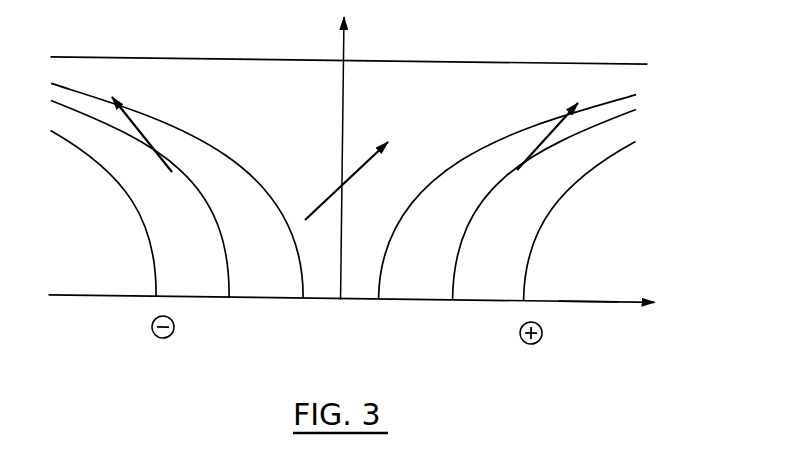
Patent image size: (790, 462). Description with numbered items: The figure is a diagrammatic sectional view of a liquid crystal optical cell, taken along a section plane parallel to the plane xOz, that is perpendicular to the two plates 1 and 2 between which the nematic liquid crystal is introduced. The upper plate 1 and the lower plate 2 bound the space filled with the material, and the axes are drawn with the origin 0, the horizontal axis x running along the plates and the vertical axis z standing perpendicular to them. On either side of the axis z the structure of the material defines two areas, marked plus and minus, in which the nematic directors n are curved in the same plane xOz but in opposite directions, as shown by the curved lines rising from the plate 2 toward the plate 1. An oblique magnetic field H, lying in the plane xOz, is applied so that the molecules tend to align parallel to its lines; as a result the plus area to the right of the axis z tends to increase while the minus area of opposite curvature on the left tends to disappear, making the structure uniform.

The plate 1 is at (509, 61).
The plate 2 is at (424, 297).
The magnetic field H is at (316, 123).
The nematic director n is at (204, 112).
The axis Oz z is at (355, 158).
The axis Ox x is at (588, 319).
The origin O 0 is at (349, 312).